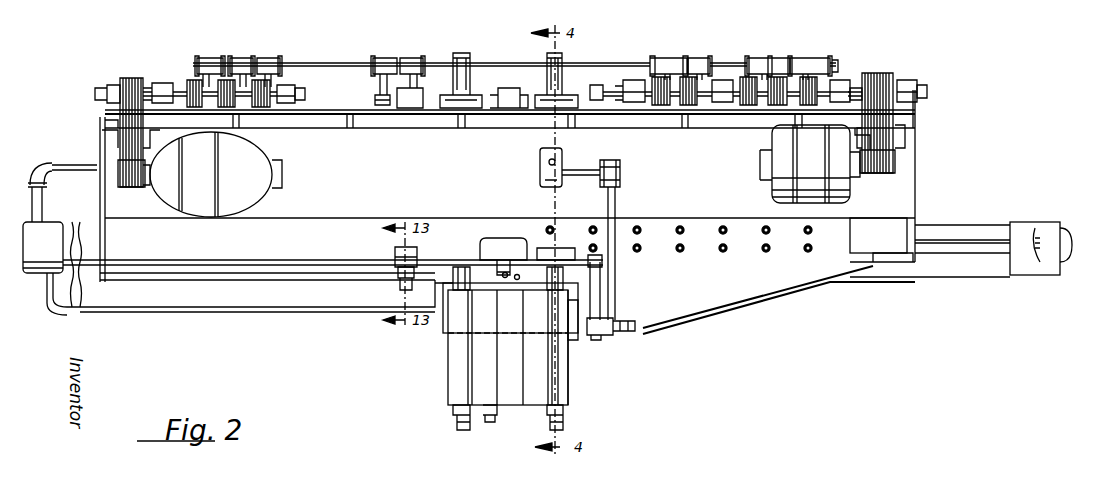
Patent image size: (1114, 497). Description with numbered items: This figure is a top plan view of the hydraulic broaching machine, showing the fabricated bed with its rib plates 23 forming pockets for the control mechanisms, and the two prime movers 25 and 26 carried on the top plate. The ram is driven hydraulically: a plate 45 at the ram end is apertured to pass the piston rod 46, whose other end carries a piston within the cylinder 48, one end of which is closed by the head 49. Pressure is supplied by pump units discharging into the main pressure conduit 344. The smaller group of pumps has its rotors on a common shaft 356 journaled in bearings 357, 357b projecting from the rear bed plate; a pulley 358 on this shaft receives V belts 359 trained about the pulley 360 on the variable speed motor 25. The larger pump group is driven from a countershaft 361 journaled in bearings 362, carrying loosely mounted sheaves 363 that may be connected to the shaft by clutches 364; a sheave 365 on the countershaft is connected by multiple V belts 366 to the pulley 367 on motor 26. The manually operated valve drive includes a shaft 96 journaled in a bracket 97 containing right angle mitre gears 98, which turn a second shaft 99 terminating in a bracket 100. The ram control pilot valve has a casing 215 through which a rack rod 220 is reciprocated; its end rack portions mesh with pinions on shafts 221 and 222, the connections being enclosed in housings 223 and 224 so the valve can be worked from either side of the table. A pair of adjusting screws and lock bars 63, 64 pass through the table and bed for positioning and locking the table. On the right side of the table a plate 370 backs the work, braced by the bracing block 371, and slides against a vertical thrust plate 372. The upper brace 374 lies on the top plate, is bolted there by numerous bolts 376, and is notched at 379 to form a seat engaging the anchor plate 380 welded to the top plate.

The main pressure conduit 344 is at (358, 62).
The pulley 358 is at (128, 78).
The pulley 360 is at (116, 187).
The bearings 357 is at (158, 83).
The bearings 357b is at (290, 97).
The common shaft 356 is at (294, 90).
The V belts 359 is at (118, 122).
The rib plates 23 is at (352, 128).
The sheaves 363 is at (630, 80).
The bearings 362 is at (640, 82).
The clutches 364 is at (668, 80).
The sheave 365 is at (880, 73).
The pulley 367 is at (895, 165).
The countershaft 361 is at (927, 92).
The V belts 366 is at (915, 118).
The prime mover 25 is at (250, 190).
The cylinder head 49 is at (45, 228).
The cylinder 48 is at (88, 230).
The shaft 96 is at (564, 168).
The bracket 97 is at (612, 160).
The mitre gears 98 is at (620, 170).
The shaft 99 is at (615, 195).
The bolts 376 is at (682, 228).
The prime mover 26 is at (778, 185).
The notch 379 is at (852, 255).
The anchor plate 380 is at (888, 262).
The piston rod 46 is at (968, 228).
The plate 45 is at (1036, 225).
The upper brace 374 is at (775, 288).
The housing 224 is at (604, 254).
The shaft 222 is at (600, 287).
The bracket 100 is at (614, 320).
The housing 223 is at (395, 258).
The shaft 221 is at (398, 282).
The rack rod 220 is at (482, 252).
The valve casing 215 is at (513, 247).
The table plate 370 is at (568, 398).
The bracing block 371 is at (560, 350).
The vertical thrust plate 372 is at (575, 340).
The adjusting screw and lock bar 64 is at (566, 432).
The adjusting screw and lock bar 63 is at (462, 431).